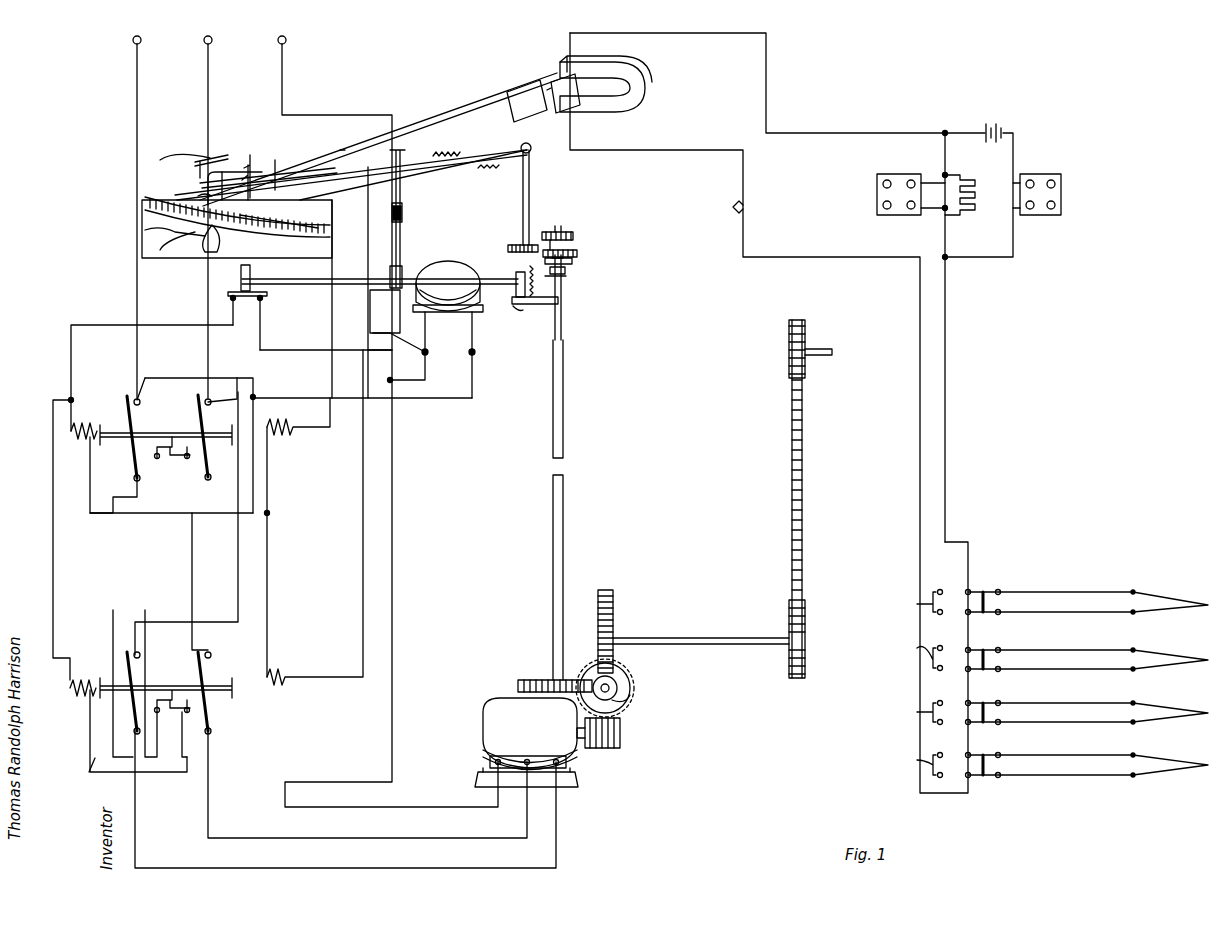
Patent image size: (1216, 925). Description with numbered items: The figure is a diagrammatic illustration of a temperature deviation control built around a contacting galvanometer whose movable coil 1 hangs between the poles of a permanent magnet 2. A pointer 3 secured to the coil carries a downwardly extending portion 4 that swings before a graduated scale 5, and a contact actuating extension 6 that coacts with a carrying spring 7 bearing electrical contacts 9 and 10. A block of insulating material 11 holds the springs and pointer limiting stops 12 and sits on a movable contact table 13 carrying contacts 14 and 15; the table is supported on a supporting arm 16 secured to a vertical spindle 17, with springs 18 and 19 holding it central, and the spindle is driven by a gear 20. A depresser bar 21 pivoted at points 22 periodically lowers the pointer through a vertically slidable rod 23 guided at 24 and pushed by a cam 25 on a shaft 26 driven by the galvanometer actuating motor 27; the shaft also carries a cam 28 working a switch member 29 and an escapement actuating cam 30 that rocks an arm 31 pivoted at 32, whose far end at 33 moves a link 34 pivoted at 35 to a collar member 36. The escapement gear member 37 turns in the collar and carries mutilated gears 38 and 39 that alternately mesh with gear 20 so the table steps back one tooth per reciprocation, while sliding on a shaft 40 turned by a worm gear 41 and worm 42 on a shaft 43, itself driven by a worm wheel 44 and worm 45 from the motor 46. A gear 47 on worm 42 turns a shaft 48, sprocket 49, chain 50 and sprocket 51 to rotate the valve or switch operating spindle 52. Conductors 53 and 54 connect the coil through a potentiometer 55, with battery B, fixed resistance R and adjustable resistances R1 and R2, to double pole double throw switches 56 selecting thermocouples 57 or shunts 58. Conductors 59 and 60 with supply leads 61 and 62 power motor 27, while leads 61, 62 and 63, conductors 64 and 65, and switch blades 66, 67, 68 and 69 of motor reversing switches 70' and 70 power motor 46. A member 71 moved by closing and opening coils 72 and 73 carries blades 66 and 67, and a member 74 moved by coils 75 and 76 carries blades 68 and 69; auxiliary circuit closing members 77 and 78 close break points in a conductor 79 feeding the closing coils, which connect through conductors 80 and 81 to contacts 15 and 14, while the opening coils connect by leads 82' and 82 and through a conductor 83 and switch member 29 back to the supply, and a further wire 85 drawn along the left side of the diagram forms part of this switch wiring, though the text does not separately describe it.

The movable coil 1 is at (538, 72).
The permanent magnet 2 is at (618, 64).
The pointer 3 is at (434, 112).
The downwardly extending portion 4 is at (143, 236).
The graduated scale 5 is at (176, 248).
The contact actuating extension 6 is at (224, 168).
The carrying spring 7 is at (206, 180).
The electrical contact 9 is at (290, 150).
The electrical contact 10 is at (252, 160).
The block of insulating material 11 is at (330, 160).
The pointer limiting stops 12 is at (252, 150).
The movable contact table 13 is at (314, 228).
The contact 14 is at (145, 232).
The contact 15 is at (263, 252).
The supporting arm 16 is at (416, 178).
The vertical spindle 17 is at (532, 186).
The spring 18 is at (445, 152).
The spring 19 is at (483, 174).
The gear 20 is at (514, 244).
The depresser bar 21 is at (160, 154).
The pivot points 22 is at (197, 154).
The vertically slidable rod 23 is at (404, 220).
The guide 24 is at (404, 202).
The cam 25 is at (400, 280).
The shaft 26 is at (365, 334).
The galvanometer actuating motor 27 is at (474, 268).
The cam 28 is at (240, 270).
The switch member 29 is at (270, 294).
The escapement actuating cam 30 is at (514, 294).
The arm 31 is at (534, 316).
The pivot 32 is at (527, 308).
The pivotal connection 33 is at (565, 305).
The link 34 is at (568, 285).
The pivotal connection 35 is at (566, 276).
The collar member 36 is at (552, 255).
The escapement gear member 37 is at (574, 262).
The escapement gear 38 is at (578, 253).
The escapement gear 39 is at (576, 234).
The shaft 40 is at (566, 500).
The worm gear 41 is at (524, 678).
The worm 42 is at (642, 688).
The shaft 43 is at (630, 700).
The worm wheel 44 is at (634, 678).
The worm 45 is at (620, 754).
The motor 46 is at (492, 700).
The gear 47 is at (618, 600).
The shaft 48 is at (692, 636).
The sprocket 49 is at (806, 620).
The chain 50 is at (806, 488).
The sprocket 51 is at (808, 328).
The valve or switch operating spindle 52 is at (812, 358).
The conductor 53 is at (766, 110).
The conductor 54 is at (752, 199).
The potentiometer 55 is at (936, 144).
The double pole double throw switches 56 is at (992, 590).
The thermocouple 57 is at (1168, 622).
The shunt 58 is at (912, 614).
The conductor 59 is at (424, 330).
The conductor 60 is at (476, 326).
The supply lead 61 is at (282, 69).
The supply lead 62 is at (208, 90).
The supply lead 63 is at (134, 100).
The conductor 64 is at (254, 537).
The conductor 65 is at (112, 584).
The switch blade 66 is at (218, 706).
The switch blade 67 is at (124, 718).
The switch blade 68 is at (188, 412).
The switch blade 69 is at (134, 474).
The motor reversing switch 70 is at (116, 438).
The motor reversing switch 70' is at (108, 682).
The member 71 is at (214, 672).
The closing coil 72 is at (284, 676).
The opening coil 73 is at (70, 688).
The member 74 is at (252, 398).
The closing coil 75 is at (298, 436).
The opening coil 76 is at (72, 446).
The auxiliary circuit closing member 77 is at (172, 690).
The auxiliary circuit closing member 78 is at (170, 468).
The conductor 79 is at (208, 454).
The conductor 80 is at (351, 448).
The conductor 81 is at (334, 320).
The conductor 82 is at (169, 517).
The conductor 82' is at (71, 762).
The conductor 83 is at (100, 326).
The wire 85 is at (50, 415).
The battery B is at (1004, 128).
The fixed resistance R is at (978, 204).
The adjustable resistance R1 is at (878, 212).
The adjustable resistance R2 is at (1048, 216).